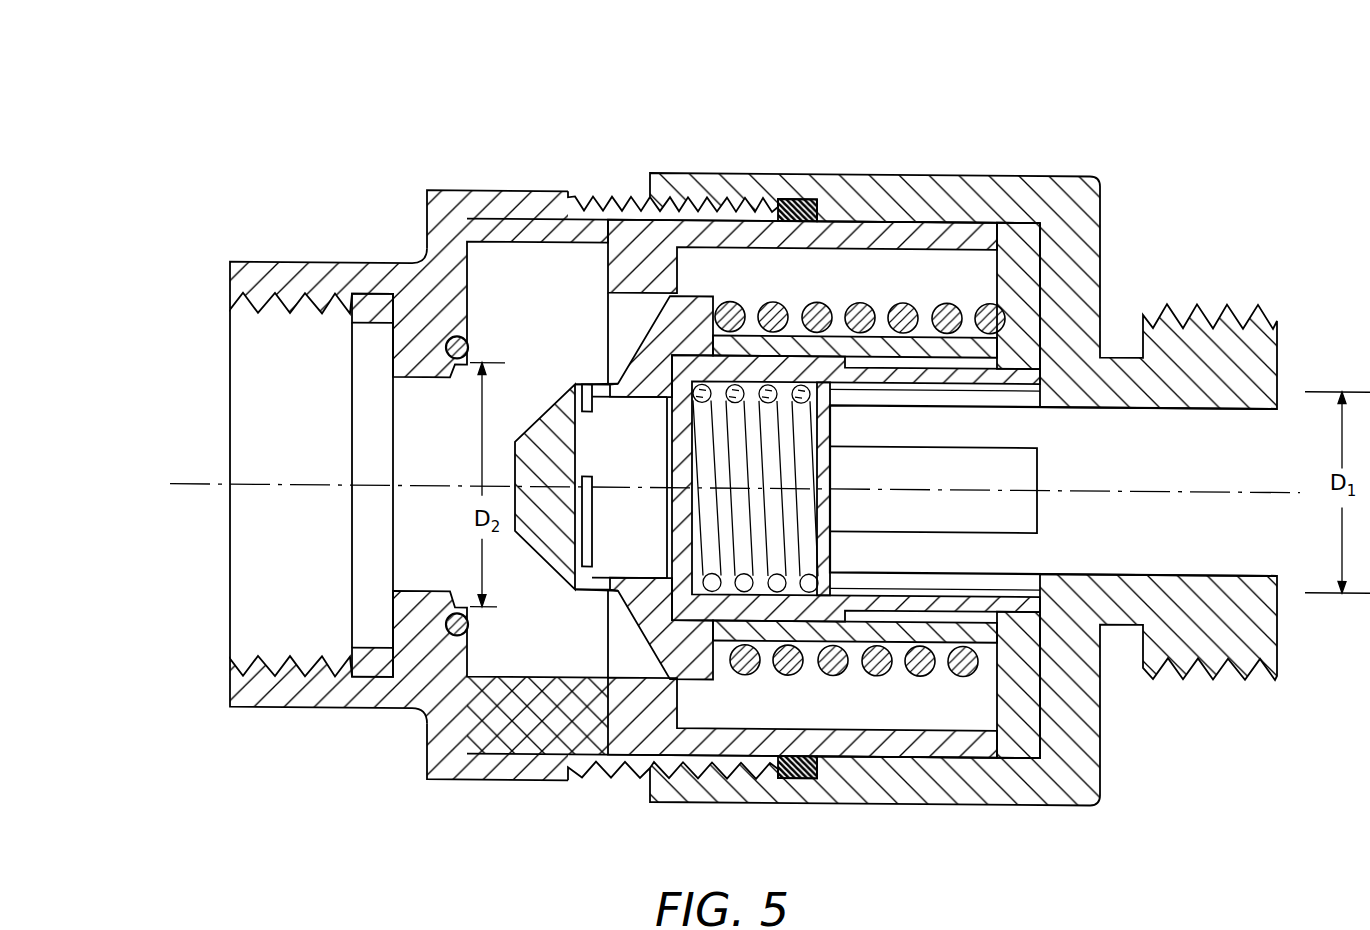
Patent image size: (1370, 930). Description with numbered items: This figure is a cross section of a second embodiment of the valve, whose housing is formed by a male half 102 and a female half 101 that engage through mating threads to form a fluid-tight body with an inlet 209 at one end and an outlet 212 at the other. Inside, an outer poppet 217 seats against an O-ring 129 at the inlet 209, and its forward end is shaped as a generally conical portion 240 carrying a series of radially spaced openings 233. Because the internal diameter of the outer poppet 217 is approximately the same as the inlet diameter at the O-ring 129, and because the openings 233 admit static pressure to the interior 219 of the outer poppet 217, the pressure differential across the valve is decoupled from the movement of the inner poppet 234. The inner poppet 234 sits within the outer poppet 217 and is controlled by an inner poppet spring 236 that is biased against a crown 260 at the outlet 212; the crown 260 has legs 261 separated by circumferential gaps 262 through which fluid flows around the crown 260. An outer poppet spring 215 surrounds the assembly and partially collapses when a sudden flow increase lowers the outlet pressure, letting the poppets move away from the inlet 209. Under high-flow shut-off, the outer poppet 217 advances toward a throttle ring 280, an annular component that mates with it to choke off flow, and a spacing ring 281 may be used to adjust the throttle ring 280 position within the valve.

The female half 101 is at (290, 263).
The male half 102 is at (1068, 171).
The O-ring 129 is at (446, 641).
The inlet 209 is at (403, 466).
The outlet 212 is at (1155, 474).
The outer poppet spring 215 is at (945, 300).
The outer poppet 217 is at (570, 598).
The interior of the outer poppet 219 is at (616, 446).
The radial openings 233 is at (590, 413).
The inner poppet 234 is at (663, 628).
The inner poppet spring 236 is at (736, 604).
The conical portion 240 is at (533, 416).
The crown 260 is at (830, 551).
The legs 261 is at (1028, 575).
The circumferential gaps 262 is at (948, 396).
The throttle ring 280 is at (677, 272).
The spacing ring 281 is at (513, 214).